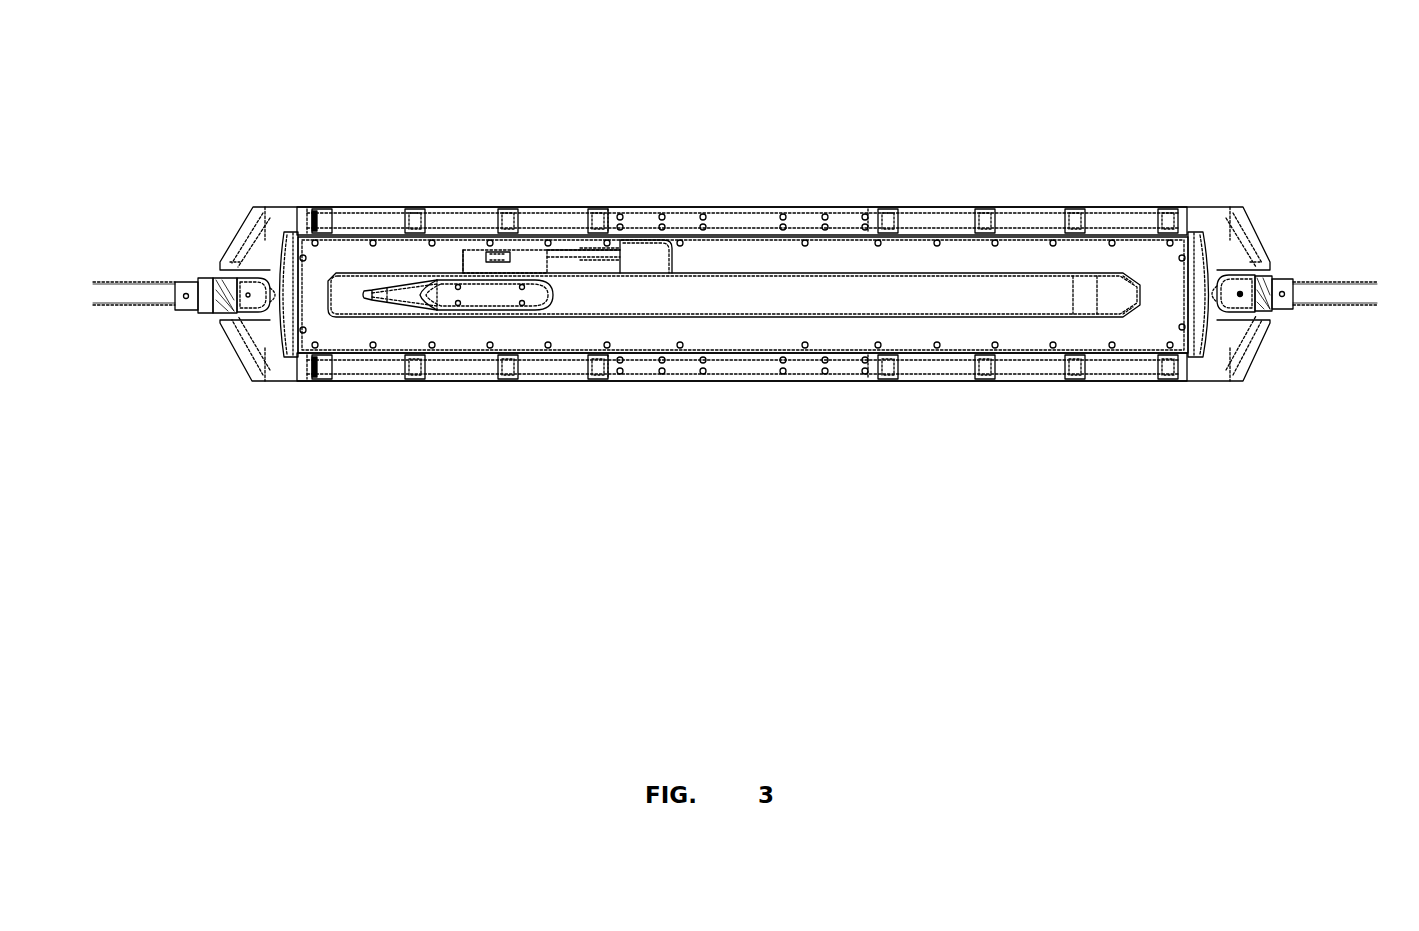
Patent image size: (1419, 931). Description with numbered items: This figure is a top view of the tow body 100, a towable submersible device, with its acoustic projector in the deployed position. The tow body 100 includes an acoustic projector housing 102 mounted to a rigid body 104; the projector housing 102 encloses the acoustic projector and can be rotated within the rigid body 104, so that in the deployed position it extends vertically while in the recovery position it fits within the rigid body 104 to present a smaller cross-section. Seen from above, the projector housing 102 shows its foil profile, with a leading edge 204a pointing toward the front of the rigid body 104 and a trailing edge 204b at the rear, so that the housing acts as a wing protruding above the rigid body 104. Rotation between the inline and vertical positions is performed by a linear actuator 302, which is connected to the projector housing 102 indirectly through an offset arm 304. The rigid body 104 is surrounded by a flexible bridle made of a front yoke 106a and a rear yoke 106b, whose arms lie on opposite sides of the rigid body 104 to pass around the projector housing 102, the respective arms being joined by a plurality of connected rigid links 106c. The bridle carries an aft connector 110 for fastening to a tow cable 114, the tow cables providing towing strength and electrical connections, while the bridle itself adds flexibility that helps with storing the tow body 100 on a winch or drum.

The tow body 100 is at (709, 168).
The acoustic projector housing 102 is at (482, 298).
The rigid body 104 is at (743, 337).
The front yoke 106a is at (1212, 372).
The rear yoke 106b is at (286, 370).
The rigid links 106c is at (926, 224).
The aft connector 110 is at (208, 288).
The cable 114 is at (148, 292).
The leading edge 204a is at (557, 290).
The trailing edge 204b is at (372, 296).
The linear actuator 302 is at (537, 252).
The offset arm 304 is at (488, 258).